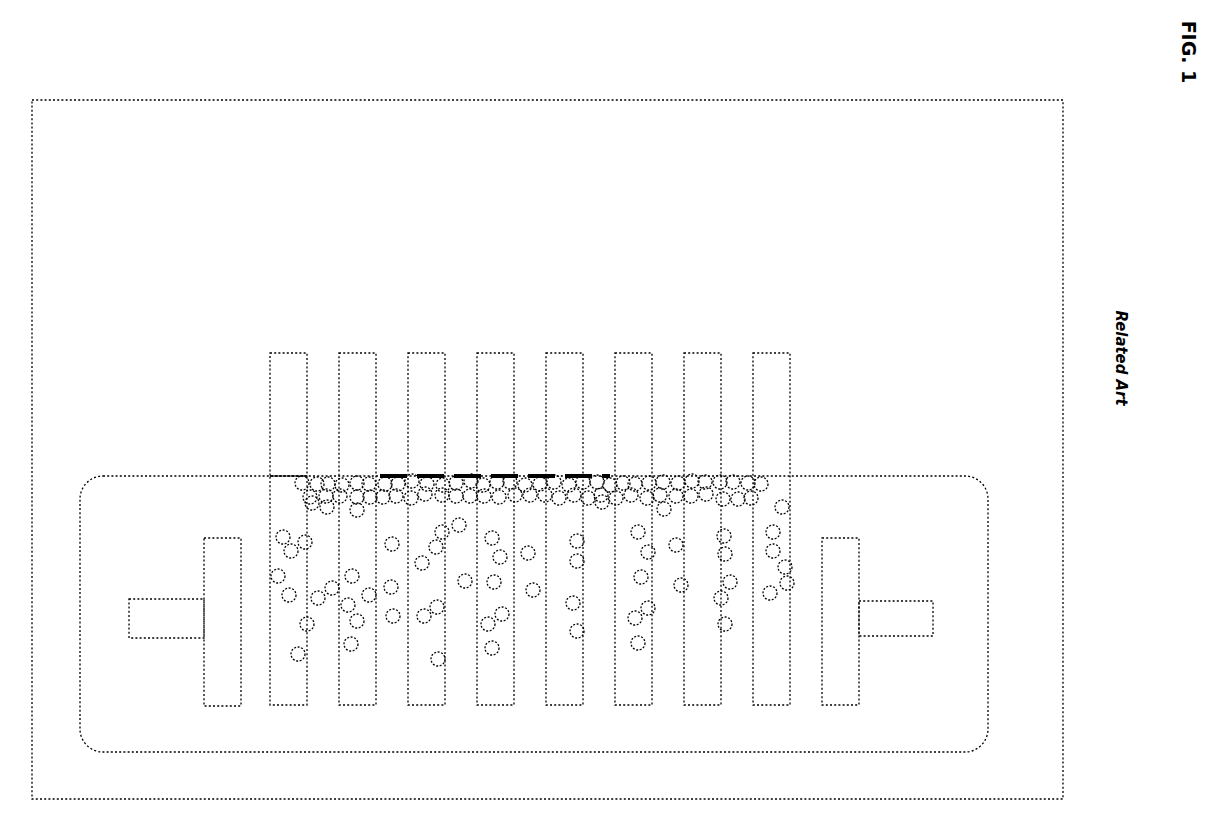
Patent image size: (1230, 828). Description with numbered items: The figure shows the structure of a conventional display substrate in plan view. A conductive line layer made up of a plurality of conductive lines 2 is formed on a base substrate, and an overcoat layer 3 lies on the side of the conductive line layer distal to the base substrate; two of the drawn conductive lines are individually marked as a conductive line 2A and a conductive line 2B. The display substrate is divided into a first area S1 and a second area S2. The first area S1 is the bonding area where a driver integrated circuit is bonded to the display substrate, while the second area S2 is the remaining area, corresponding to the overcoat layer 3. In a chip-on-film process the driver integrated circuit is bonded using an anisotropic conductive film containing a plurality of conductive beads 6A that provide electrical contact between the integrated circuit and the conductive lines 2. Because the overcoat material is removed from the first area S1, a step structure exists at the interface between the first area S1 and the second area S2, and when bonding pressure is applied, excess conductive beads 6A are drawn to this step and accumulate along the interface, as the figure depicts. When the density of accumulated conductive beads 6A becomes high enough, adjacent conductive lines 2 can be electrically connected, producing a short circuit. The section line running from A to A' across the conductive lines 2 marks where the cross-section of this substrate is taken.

The conductive lines 2 is at (493, 529).
The electrode (first) 2A is at (288, 590).
The electrode (second) 2B is at (288, 414).
The conductive beads 6A is at (671, 478).
The overcoat layer 3 is at (547, 449).
The first area S1 is at (534, 614).
The second area S2 is at (840, 455).
The A-A' line end A is at (483, 467).
The A-A' line end A' is at (632, 465).